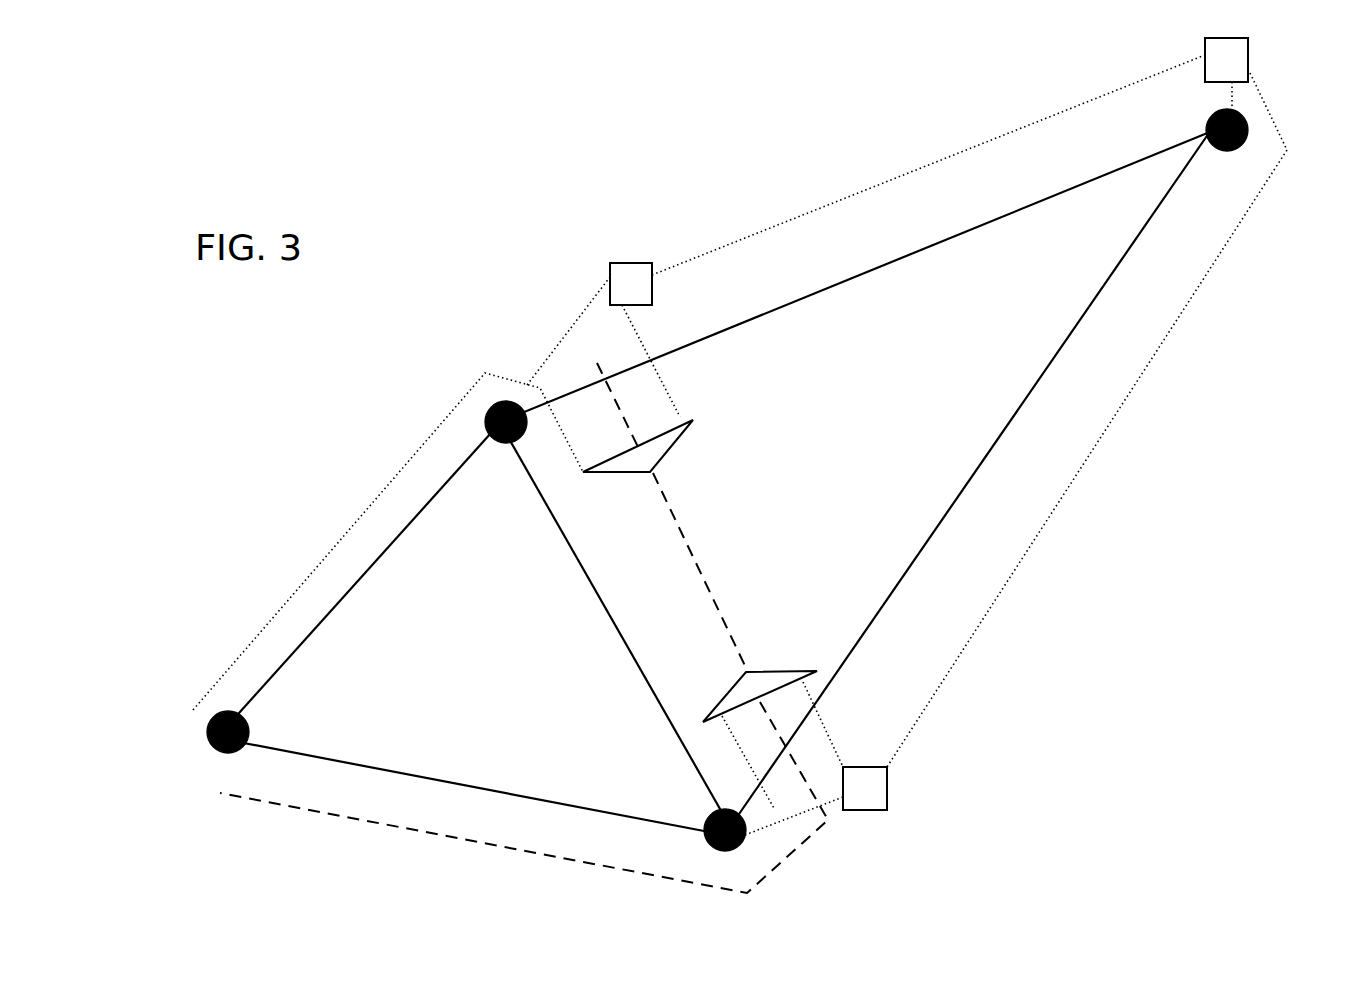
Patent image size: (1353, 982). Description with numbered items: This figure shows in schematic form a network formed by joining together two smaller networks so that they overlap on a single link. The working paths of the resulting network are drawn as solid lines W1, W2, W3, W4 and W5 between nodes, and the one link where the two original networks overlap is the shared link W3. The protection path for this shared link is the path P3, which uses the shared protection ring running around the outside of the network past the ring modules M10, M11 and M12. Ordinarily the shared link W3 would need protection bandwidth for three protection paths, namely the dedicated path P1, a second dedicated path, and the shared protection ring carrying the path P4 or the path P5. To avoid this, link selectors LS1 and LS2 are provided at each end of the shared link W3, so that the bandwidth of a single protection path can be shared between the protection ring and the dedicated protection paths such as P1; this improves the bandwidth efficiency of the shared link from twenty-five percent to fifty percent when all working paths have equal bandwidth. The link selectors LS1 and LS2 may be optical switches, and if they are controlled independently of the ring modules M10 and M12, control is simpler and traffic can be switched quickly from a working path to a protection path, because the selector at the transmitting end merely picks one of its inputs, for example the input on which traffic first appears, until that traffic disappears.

The working path W1 is at (392, 766).
The working path W2 is at (322, 636).
The shared link W3 is at (625, 668).
The working path W4 is at (777, 311).
The working path W5 is at (1052, 358).
The ring module M10 is at (630, 266).
The ring module M11 is at (1257, 63).
The ring module M12 is at (875, 811).
The link selector LS1 is at (760, 680).
The link selector LS2 is at (658, 446).
The dedicated protection path P1 is at (742, 558).
The protection path P3 is at (1136, 373).
The protection path P4 is at (828, 744).
The protection path P5 is at (812, 207).